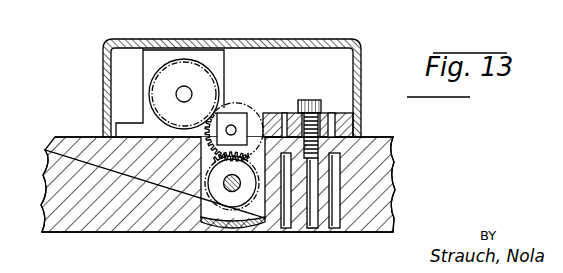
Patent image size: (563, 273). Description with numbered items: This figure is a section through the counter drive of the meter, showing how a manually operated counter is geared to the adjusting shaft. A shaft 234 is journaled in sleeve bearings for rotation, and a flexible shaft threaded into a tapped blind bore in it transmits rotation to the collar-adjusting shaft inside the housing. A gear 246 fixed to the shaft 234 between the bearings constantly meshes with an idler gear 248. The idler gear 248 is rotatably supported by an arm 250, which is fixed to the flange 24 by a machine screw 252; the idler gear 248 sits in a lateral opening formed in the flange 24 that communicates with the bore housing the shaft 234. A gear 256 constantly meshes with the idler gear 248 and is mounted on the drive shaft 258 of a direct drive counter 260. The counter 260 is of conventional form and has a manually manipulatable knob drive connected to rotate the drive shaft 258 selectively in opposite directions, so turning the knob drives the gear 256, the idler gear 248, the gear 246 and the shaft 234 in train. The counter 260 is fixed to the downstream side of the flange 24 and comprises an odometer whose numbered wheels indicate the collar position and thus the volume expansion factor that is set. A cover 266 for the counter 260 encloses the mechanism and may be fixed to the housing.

The flange 24 is at (377, 137).
The shaft 234 is at (228, 190).
The gear 246 is at (245, 205).
The idler gear 248 is at (206, 151).
The arm 250 is at (343, 113).
The machine screw 252 is at (308, 108).
The gear 256 is at (165, 64).
The drive shaft 258 is at (190, 92).
The direct drive counter 260 is at (143, 73).
The cover 266 is at (322, 40).